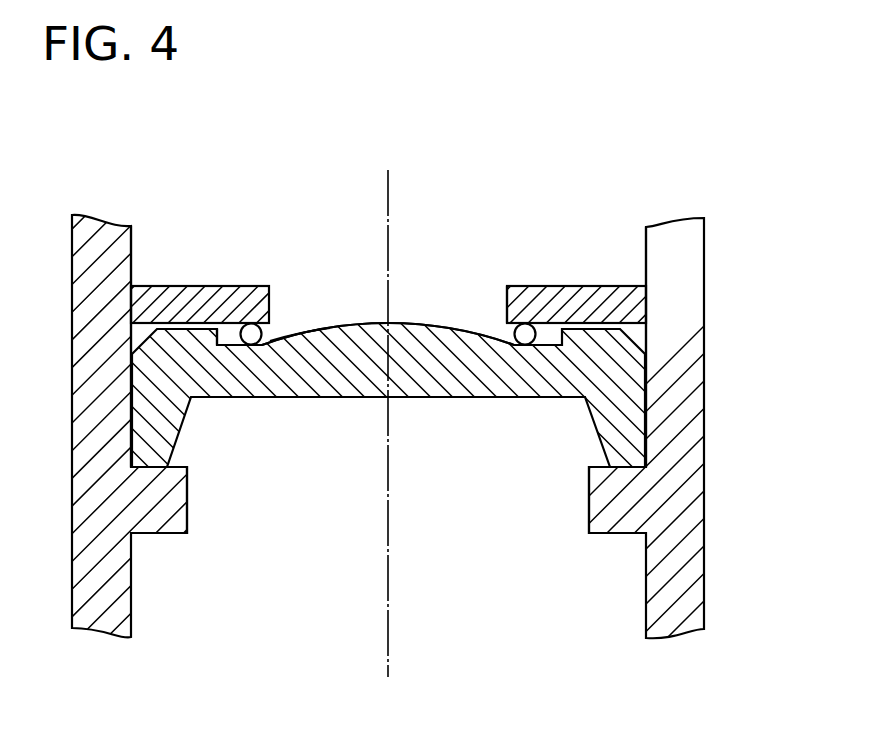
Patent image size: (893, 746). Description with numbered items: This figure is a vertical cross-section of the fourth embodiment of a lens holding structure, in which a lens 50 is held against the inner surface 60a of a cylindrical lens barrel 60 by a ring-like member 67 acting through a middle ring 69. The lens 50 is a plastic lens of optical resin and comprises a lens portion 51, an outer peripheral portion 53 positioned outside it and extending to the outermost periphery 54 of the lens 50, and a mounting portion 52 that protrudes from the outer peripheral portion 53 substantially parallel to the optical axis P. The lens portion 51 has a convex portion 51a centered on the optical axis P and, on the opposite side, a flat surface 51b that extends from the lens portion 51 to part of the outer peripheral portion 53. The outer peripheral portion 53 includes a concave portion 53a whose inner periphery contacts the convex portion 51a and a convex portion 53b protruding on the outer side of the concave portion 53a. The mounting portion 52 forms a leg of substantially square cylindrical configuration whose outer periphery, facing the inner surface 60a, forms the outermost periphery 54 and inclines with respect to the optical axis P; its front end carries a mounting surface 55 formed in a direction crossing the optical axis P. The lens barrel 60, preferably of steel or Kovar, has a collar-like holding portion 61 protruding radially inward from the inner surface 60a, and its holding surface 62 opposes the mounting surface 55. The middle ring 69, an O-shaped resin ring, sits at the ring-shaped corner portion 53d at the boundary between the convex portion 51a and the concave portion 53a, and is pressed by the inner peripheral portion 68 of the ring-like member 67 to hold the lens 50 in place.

The optical axis P is at (386, 183).
The lens 50 is at (421, 290).
The lens portion 51 is at (338, 340).
The convex portion 51a is at (302, 342).
The flat surface 51b is at (320, 398).
The mounting portion 52 is at (143, 428).
The outer peripheral portion 53 is at (588, 320).
The concave portion 53a is at (220, 340).
The convex portion 53b is at (163, 328).
The ring-shaped corner portion 53d is at (249, 347).
The outermost periphery 54 is at (130, 378).
The mounting surface 55 is at (160, 470).
The lens barrel 60 is at (681, 438).
The inner surface 60a is at (646, 240).
The holding portion 61 is at (620, 515).
The holding surface 62 is at (628, 466).
The ring-like member 67 is at (533, 294).
The inner peripheral portion 68 is at (507, 302).
The middle ring 69 is at (249, 323).